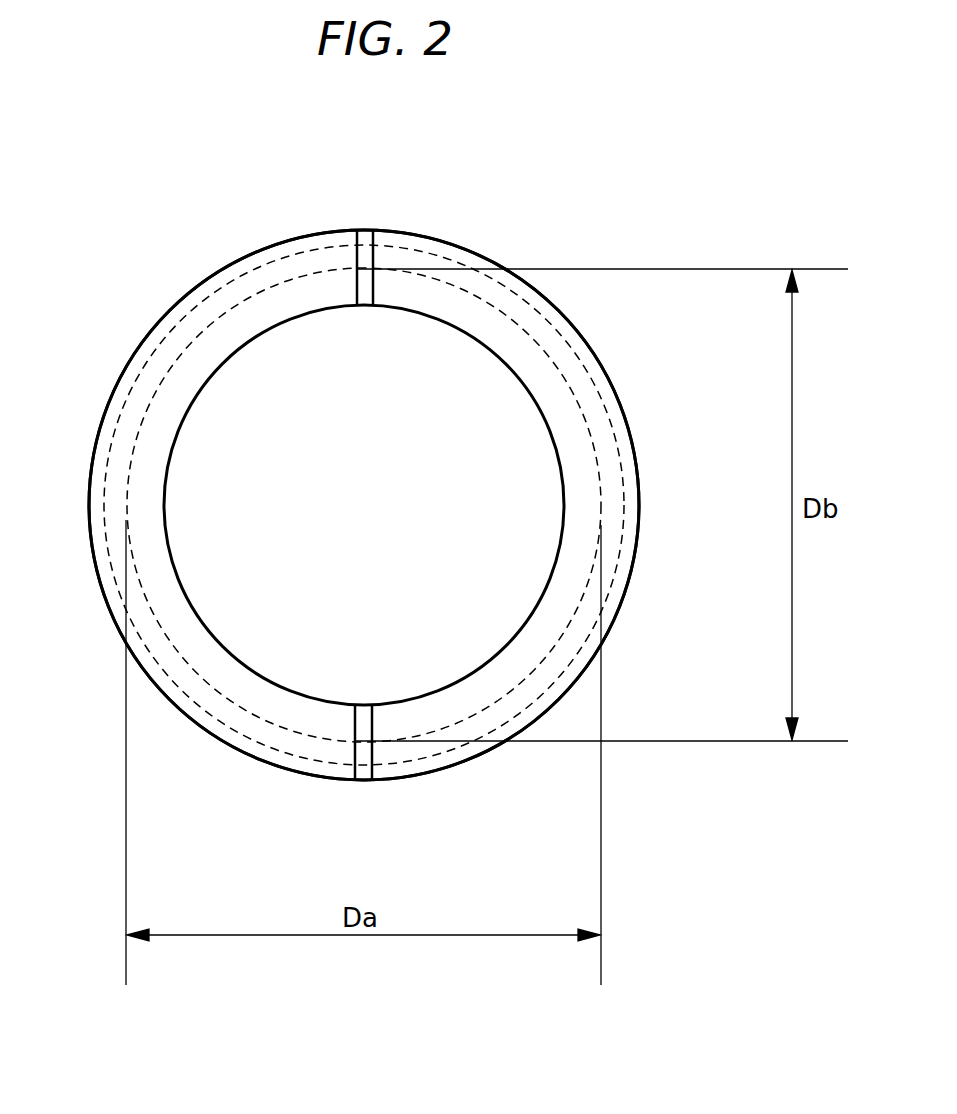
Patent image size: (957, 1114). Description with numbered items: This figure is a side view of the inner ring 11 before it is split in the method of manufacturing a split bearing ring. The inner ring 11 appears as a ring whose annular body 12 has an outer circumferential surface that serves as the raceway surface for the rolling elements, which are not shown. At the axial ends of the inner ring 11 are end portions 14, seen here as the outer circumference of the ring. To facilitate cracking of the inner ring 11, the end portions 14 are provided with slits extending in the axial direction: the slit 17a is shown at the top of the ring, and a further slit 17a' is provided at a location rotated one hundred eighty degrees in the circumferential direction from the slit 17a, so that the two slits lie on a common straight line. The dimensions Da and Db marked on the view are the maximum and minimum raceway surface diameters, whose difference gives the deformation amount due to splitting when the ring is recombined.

The inner ring 11 is at (551, 217).
The annular body 12 is at (247, 300).
The end portion 14 is at (119, 380).
The slit 17a is at (369, 222).
The slit 17a' is at (395, 783).